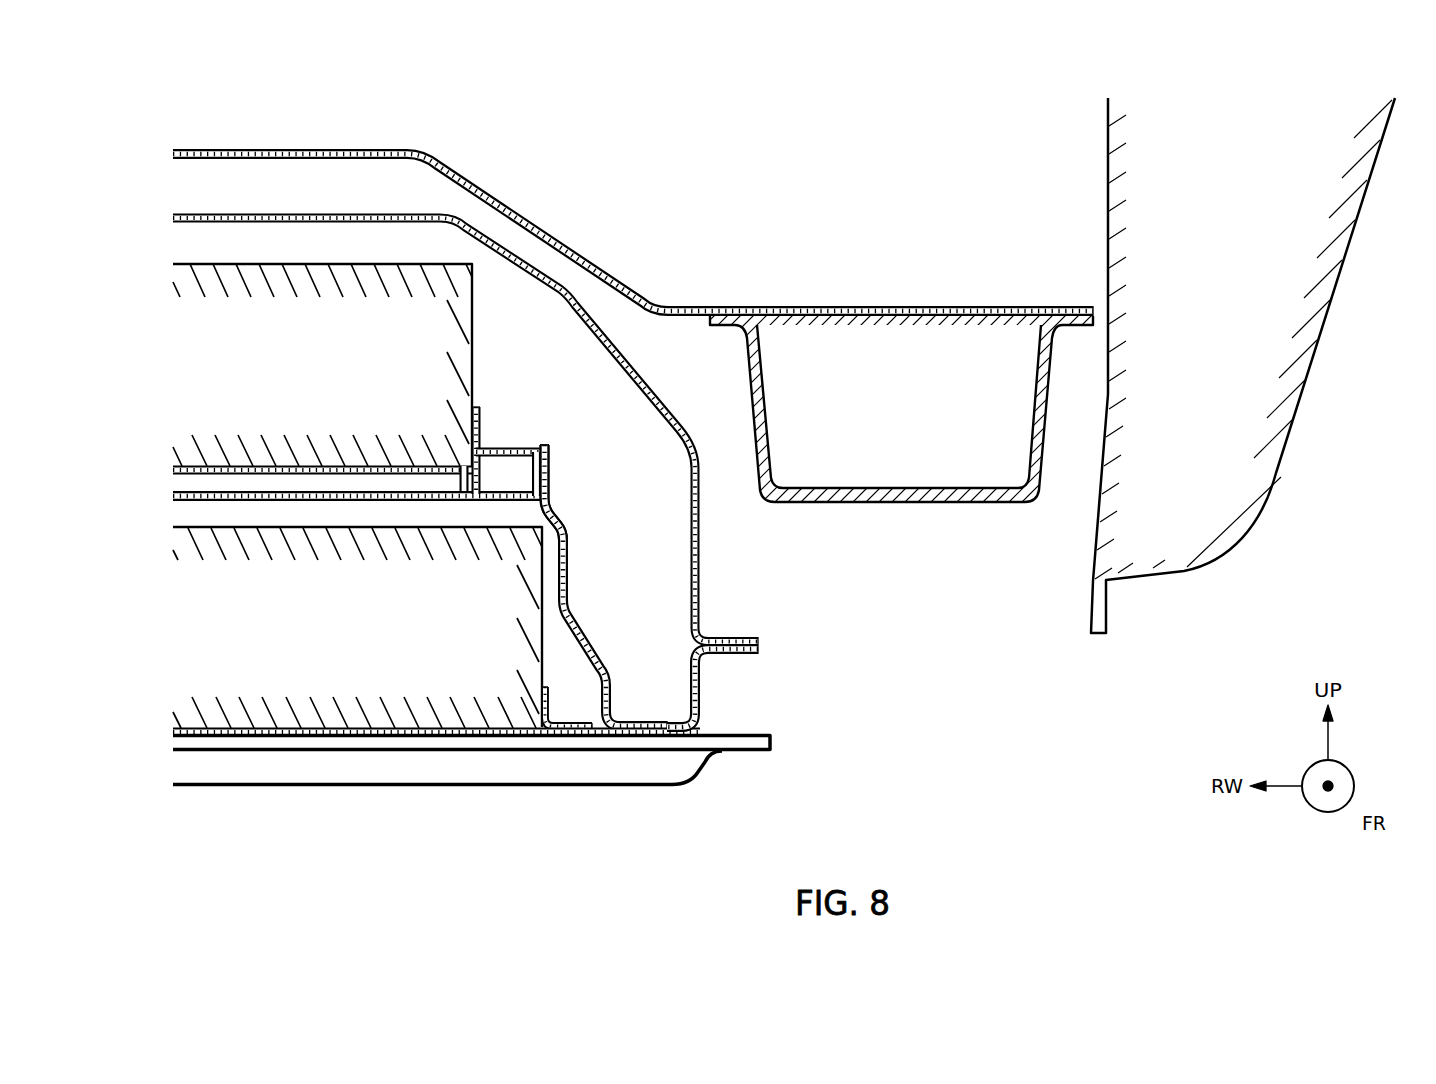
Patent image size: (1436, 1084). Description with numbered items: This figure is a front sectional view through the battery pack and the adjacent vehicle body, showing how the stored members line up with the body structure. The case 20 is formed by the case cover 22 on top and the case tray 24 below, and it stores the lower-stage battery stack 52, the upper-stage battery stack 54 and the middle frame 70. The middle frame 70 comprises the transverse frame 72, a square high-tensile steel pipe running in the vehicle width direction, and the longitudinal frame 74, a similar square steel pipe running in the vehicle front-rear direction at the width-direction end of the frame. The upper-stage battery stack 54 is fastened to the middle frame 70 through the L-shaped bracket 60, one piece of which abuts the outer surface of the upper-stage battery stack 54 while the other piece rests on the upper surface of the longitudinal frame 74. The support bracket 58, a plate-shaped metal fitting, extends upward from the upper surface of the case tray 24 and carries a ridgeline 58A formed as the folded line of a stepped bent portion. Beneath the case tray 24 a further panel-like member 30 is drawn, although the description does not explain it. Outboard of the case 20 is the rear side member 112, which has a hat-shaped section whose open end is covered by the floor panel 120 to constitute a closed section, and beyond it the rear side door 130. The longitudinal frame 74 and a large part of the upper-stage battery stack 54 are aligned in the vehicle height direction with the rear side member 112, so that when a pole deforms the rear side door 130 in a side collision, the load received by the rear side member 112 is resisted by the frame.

The case 20 is at (578, 472).
The case cover 22 is at (510, 430).
The case tray 24 is at (697, 692).
The floor panel 30 is at (738, 753).
The lower-stage battery stack 52 is at (355, 720).
The upper-stage battery stack 54 is at (457, 298).
The support bracket 58 is at (595, 562).
The ridgeline 58A is at (573, 533).
The L-shaped bracket 60 is at (480, 415).
The middle frame 70 is at (359, 512).
The transverse frame 72 is at (203, 503).
The longitudinal frame 74 is at (523, 443).
The rear side member 112 is at (910, 505).
The floor panel 120 is at (333, 147).
The rear side door 130 is at (1247, 529).